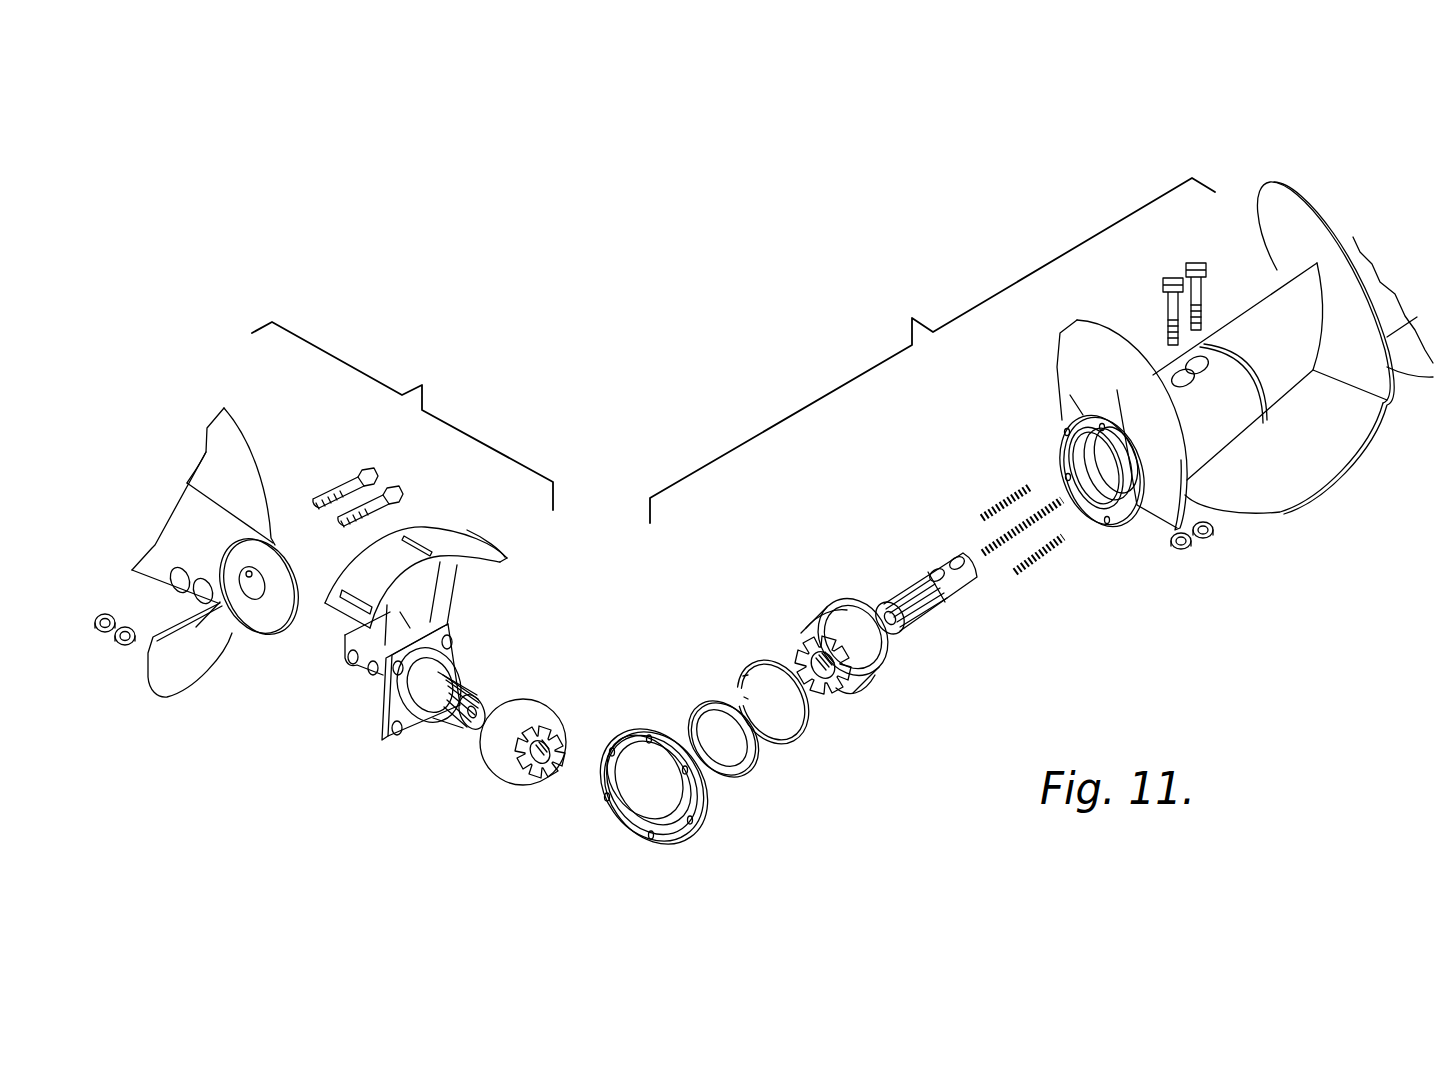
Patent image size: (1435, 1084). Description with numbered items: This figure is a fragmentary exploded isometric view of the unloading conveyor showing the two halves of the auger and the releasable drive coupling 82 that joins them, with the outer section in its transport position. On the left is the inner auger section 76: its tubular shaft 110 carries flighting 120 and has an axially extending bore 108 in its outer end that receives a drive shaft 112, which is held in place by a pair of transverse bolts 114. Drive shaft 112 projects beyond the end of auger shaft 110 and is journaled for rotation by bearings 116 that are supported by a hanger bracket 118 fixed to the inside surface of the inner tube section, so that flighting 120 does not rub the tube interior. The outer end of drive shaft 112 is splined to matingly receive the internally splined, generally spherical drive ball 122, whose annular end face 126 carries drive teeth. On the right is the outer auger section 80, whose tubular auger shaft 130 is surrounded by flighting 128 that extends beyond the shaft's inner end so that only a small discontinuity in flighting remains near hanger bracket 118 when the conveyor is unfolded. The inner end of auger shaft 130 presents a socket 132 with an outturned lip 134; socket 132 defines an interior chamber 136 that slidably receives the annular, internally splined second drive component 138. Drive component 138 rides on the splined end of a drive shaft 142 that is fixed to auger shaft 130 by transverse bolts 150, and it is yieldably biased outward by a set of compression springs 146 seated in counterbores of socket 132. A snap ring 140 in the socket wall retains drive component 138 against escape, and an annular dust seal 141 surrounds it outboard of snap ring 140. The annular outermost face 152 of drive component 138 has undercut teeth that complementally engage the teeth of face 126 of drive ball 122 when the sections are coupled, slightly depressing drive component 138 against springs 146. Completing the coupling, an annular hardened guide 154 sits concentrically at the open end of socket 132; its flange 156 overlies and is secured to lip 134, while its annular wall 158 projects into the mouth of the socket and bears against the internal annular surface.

The inner section of auger 76 is at (193, 437).
The outer section of auger 80 is at (1355, 215).
The drive coupling 82 is at (517, 808).
The bore 108 is at (258, 592).
The tubular shaft 110 is at (178, 533).
The drive shaft 112 is at (366, 658).
The transverse bolts 114 is at (345, 490).
The bearings 116 is at (465, 650).
The hanger bracket 118 is at (445, 577).
The flighting 120 is at (232, 447).
The drive ball 122 is at (500, 757).
The annular end face 126 is at (548, 722).
The flighting 128 is at (1278, 182).
The tubular auger shaft 130 is at (1270, 307).
The socket 132 is at (1193, 457).
The outturned lip 134 is at (1065, 443).
The interior chamber 136 is at (1102, 500).
The drive component 138 is at (880, 665).
The snap ring 140 is at (798, 742).
The dust seal 141 is at (748, 770).
The drive shaft 142 is at (957, 588).
The compression springs 146 is at (1003, 500).
The transverse bolts 150 is at (1196, 270).
The annular outermost face 152 is at (832, 693).
The guide 154 is at (667, 843).
The flange 156 is at (620, 738).
The annular wall 158 is at (705, 793).